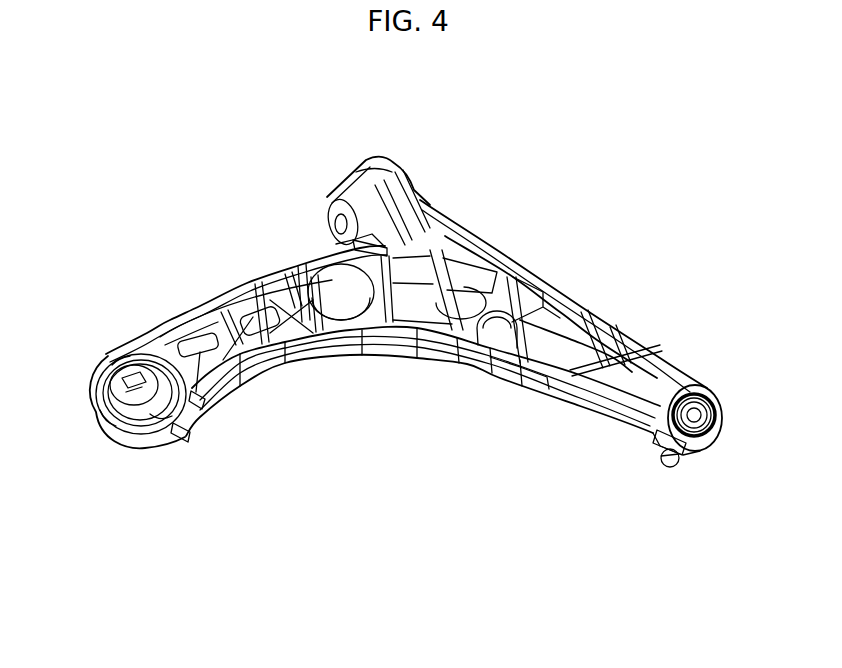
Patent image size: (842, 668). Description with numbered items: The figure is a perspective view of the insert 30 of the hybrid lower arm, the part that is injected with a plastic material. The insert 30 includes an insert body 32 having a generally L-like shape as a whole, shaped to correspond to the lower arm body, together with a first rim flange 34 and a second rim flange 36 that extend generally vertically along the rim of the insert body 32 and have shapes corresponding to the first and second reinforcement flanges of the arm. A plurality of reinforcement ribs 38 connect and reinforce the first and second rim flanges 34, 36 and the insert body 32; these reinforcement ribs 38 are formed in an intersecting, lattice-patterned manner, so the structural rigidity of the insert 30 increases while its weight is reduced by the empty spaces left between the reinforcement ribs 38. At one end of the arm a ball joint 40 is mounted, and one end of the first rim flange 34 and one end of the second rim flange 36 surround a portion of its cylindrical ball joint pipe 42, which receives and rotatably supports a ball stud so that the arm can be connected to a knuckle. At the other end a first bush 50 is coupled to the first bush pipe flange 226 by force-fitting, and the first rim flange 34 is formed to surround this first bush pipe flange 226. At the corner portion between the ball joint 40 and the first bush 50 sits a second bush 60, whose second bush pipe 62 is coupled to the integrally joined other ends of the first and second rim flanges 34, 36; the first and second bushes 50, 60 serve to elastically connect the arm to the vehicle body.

The insert 30 is at (530, 250).
The insert body 32 is at (420, 297).
The first rim flange 34 is at (268, 275).
The second rim flange 36 is at (572, 300).
The reinforcement ribs 38 is at (478, 268).
The ball joint 40 is at (662, 486).
The ball joint pipe 42 is at (700, 458).
The first bush 50 is at (150, 450).
The second bush 60 is at (338, 148).
The second bush pipe 62 is at (372, 162).
The first bush pipe flange 226 is at (195, 350).